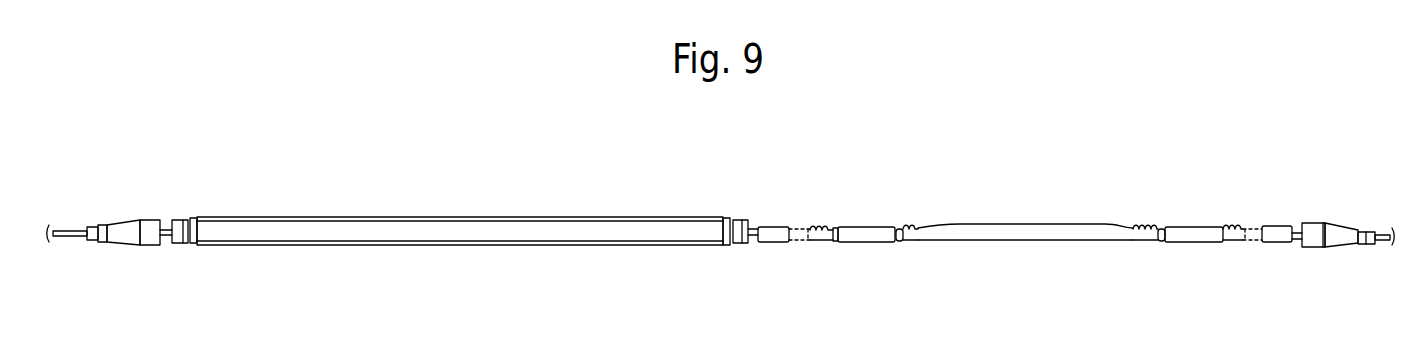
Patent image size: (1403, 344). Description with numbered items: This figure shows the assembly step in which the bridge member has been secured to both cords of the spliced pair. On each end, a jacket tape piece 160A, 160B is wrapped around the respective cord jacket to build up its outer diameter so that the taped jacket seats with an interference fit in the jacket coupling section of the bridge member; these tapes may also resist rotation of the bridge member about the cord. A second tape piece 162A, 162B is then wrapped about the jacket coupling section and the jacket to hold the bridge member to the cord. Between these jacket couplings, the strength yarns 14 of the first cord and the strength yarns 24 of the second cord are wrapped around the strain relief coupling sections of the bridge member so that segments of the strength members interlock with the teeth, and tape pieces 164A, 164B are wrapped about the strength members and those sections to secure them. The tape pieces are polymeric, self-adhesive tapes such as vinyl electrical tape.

The strength yarns 14 is at (1162, 236).
The strength yarns 24 is at (902, 236).
The jacket tape piece 160A is at (1275, 232).
The jacket tape piece 160B is at (797, 223).
The tape piece 162A is at (1253, 222).
The tape piece 162B is at (773, 230).
The tape piece 164A is at (1188, 228).
The tape piece 164B is at (878, 230).